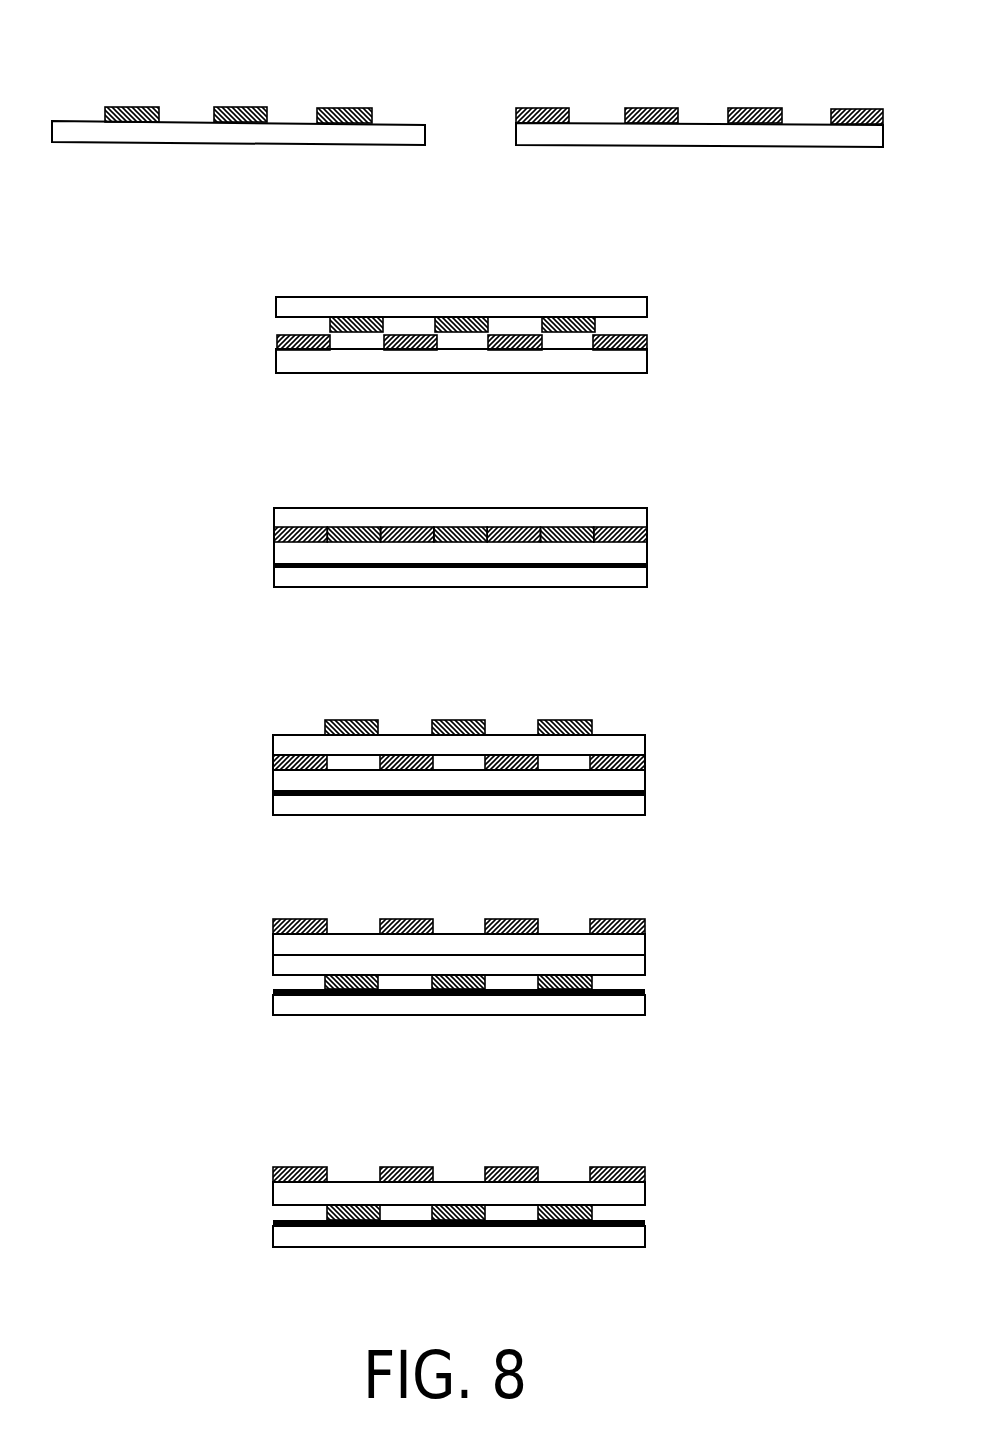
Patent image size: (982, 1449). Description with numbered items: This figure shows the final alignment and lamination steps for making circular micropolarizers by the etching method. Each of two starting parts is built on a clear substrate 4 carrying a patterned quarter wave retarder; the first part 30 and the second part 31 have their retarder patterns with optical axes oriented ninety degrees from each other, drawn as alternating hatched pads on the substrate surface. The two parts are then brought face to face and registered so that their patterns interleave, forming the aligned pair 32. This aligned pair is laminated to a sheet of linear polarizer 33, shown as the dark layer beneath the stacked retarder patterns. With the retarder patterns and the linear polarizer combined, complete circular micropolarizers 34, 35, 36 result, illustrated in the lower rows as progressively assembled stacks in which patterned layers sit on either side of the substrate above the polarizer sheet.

The clear substrate 4 is at (267, 148).
The patterned retarder part 30 is at (233, 107).
The patterned retarder part 31 is at (650, 107).
The aligned parts 32 is at (233, 348).
The sheet of linear polarizer 33 is at (273, 565).
The complete circular micropolarizer 34 is at (247, 767).
The complete circular micropolarizer 35 is at (252, 960).
The complete circular micropolarizer 36 is at (248, 1178).